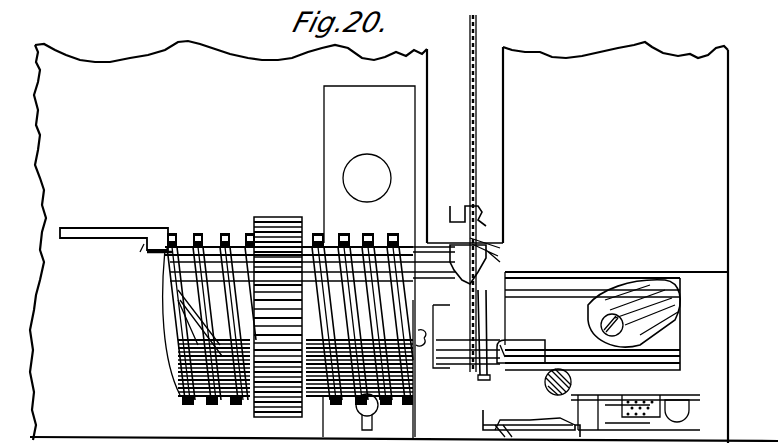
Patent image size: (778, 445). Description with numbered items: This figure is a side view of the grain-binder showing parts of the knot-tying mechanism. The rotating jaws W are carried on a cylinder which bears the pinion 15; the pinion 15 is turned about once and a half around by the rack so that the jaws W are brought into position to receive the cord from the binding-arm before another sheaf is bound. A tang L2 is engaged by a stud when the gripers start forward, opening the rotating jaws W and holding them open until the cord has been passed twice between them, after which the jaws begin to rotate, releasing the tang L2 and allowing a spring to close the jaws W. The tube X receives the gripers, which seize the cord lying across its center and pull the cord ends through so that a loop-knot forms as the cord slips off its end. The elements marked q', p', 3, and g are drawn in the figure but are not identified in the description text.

The tang L2 is at (112, 228).
The stop q' is at (131, 269).
The pinion 15 is at (278, 307).
The coil drum p' is at (288, 319).
The rotating jaws W is at (466, 197).
The tube X is at (616, 321).
The part 3 is at (419, 370).
The lever g is at (531, 424).